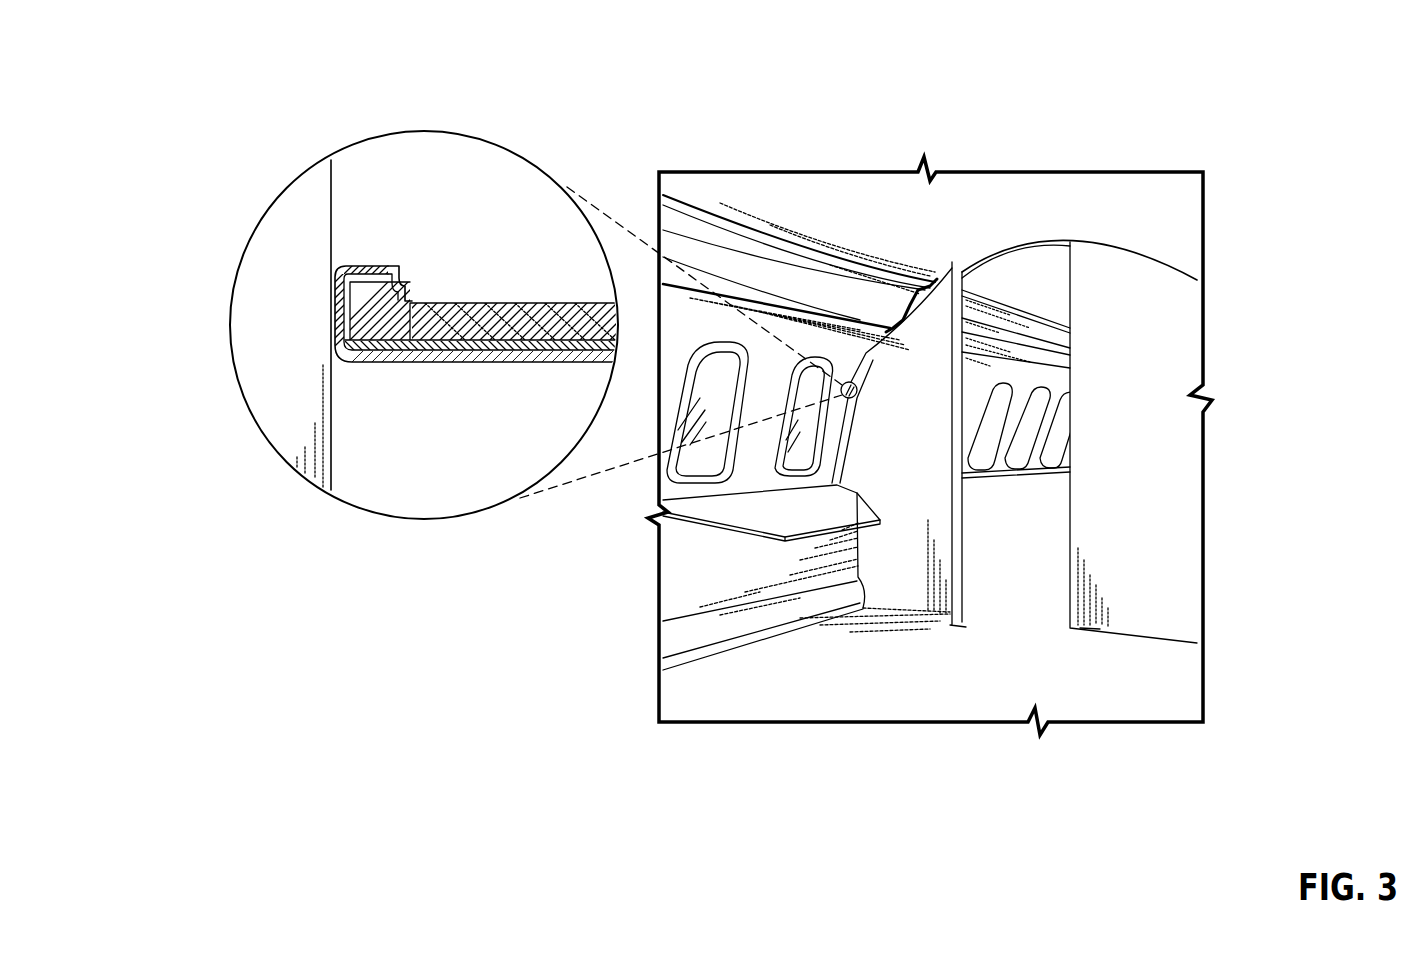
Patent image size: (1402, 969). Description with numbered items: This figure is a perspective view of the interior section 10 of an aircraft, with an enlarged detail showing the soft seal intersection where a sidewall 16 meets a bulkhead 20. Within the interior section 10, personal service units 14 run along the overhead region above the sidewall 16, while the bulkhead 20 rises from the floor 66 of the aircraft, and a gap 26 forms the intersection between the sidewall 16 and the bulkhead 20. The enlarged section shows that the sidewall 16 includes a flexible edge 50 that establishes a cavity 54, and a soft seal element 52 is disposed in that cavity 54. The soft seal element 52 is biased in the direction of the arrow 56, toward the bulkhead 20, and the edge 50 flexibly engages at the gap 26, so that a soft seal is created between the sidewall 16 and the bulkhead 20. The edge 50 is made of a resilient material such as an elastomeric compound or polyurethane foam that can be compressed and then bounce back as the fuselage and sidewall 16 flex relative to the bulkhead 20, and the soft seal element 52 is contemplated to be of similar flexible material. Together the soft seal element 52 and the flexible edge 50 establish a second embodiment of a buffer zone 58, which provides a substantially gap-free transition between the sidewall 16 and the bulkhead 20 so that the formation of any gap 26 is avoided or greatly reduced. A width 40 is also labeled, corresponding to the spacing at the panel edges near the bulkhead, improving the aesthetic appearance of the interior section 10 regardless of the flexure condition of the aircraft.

The interior section 10 is at (803, 108).
The personal service units 14 is at (880, 297).
The sidewall 16 is at (463, 337).
The bulkhead 20 is at (308, 192).
The gap 26 is at (340, 333).
The width 40 is at (937, 280).
The edge 50 is at (392, 268).
The soft seal element 52 is at (385, 328).
The cavity 54 is at (342, 313).
The arrow 56 is at (410, 232).
The buffer zone 58 is at (483, 133).
The floor 66 is at (925, 683).